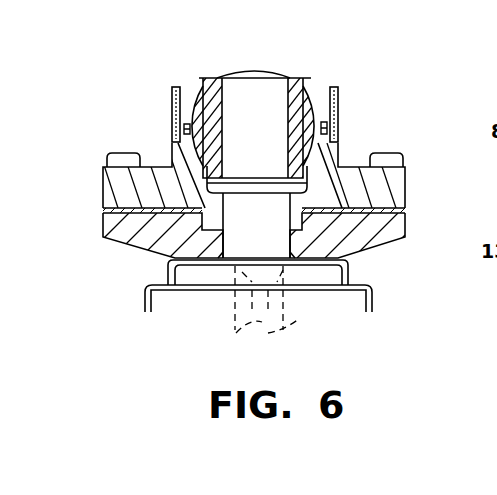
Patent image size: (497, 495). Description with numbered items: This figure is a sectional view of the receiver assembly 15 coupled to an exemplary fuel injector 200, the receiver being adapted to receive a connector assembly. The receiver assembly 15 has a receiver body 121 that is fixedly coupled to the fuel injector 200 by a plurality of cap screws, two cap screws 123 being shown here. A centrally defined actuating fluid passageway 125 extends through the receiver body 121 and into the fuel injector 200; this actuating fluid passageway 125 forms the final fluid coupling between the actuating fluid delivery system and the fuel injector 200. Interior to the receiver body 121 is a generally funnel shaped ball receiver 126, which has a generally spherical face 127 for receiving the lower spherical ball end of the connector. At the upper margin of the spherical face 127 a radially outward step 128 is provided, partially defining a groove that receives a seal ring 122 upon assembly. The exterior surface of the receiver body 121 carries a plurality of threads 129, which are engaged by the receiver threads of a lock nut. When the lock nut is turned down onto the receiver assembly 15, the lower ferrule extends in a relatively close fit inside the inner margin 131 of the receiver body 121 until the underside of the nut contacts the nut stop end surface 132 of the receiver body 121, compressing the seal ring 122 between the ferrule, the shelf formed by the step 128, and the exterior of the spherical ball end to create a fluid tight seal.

The receiver assembly 15 is at (256, 68).
The receiver body 121 is at (405, 187).
The seal ring 122 is at (172, 132).
The cap screws 123 is at (112, 161).
The actuating fluid passageway 125 is at (305, 325).
The ball receiver 126 is at (223, 110).
The spherical face 127 is at (290, 129).
The radially outward step 128 is at (327, 125).
The threads 129 is at (172, 108).
The inner margin 131 is at (200, 87).
The nut stop end surface 132 is at (340, 84).
The fuel injector 200 is at (372, 290).